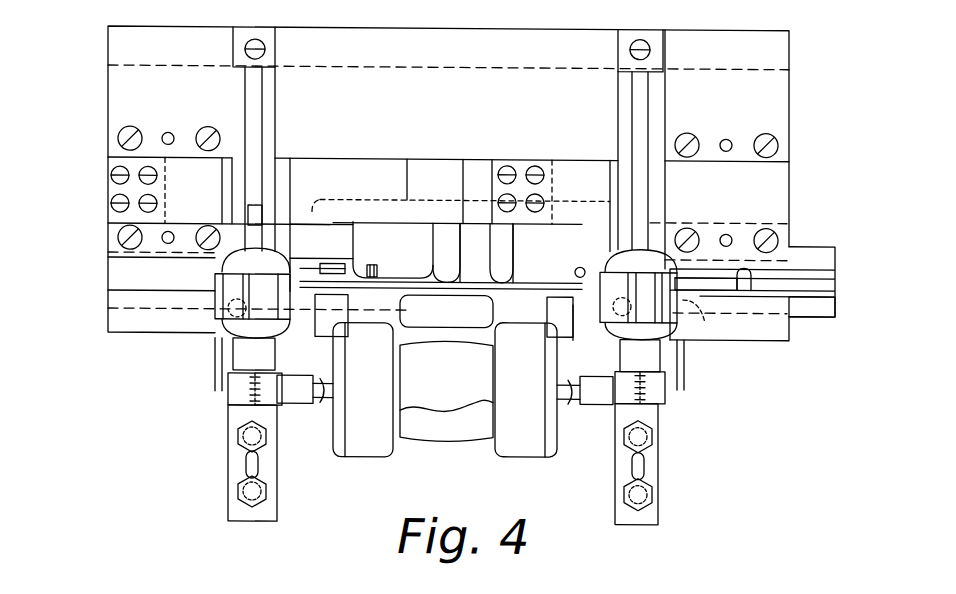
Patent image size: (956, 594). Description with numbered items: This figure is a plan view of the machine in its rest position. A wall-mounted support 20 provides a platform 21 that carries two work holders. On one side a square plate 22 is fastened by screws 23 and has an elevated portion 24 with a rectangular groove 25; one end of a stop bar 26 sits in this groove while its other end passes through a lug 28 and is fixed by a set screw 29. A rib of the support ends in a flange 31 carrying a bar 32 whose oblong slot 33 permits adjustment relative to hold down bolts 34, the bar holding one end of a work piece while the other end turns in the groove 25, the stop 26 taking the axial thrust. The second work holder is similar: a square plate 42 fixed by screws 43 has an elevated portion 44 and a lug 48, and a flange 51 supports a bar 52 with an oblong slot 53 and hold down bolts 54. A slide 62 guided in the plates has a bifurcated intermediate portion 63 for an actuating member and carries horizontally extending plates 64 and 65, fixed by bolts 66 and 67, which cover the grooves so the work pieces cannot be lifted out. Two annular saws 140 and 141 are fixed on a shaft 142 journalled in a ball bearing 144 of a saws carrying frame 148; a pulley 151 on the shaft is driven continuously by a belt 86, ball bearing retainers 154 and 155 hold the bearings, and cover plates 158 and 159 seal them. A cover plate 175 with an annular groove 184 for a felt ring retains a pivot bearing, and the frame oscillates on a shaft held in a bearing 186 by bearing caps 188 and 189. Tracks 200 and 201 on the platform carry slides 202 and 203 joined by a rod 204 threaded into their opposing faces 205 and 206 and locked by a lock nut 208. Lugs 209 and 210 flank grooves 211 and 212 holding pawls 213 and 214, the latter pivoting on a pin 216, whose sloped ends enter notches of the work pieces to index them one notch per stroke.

The support 20 is at (780, 51).
The platform 21 is at (420, 83).
The square plate 22 is at (115, 105).
The screws 23 is at (205, 128).
The elevated portion 24 is at (270, 172).
The rectangular groove 25 is at (293, 200).
The stop bar 26 is at (256, 123).
The lug 28 is at (276, 56).
The set screw 29 is at (244, 49).
The flange 31 is at (257, 467).
The bar 32 is at (272, 503).
The oblong slot 33 is at (248, 460).
The hold down bolts 34 is at (250, 436).
The square plate 42 is at (775, 110).
The screws 43 is at (761, 132).
The elevated portion 44 is at (655, 188).
The lug 48 is at (630, 49).
The flange 51 is at (641, 464).
The bar 52 is at (660, 468).
The oblong slot 53 is at (632, 466).
The hold down bolts 54 is at (642, 496).
The slide 62 is at (378, 180).
The bifurcated intermediate portion 63 is at (470, 305).
The horizontally extending plate 64 is at (214, 170).
The horizontally extending plate 65 is at (578, 172).
The bolts 66 is at (112, 195).
The bolts 67 is at (535, 162).
The belt 86 is at (430, 408).
The annular saw 140 is at (255, 392).
The annular saw 141 is at (642, 391).
The shaft 142 is at (292, 382).
The ball bearing 144 is at (346, 320).
The saws carrying frame 148 is at (520, 437).
The pulley 151 is at (472, 436).
The ball bearing retainer 154 is at (316, 412).
The ball bearing retainer 155 is at (576, 417).
The cover plate 158 is at (340, 450).
The cover plate 159 is at (555, 449).
The cover plate 175 is at (548, 315).
The annular groove 184 is at (675, 348).
The bearing 186 is at (232, 352).
The bearing cap 188 is at (228, 382).
The bearing cap 189 is at (668, 379).
The track 200 is at (137, 340).
The track 201 is at (765, 316).
The slide 202 is at (140, 300).
The slide 203 is at (812, 302).
The rod 204 is at (470, 260).
The opposing face 205 is at (362, 243).
The opposing face 206 is at (588, 264).
The lock nut 208 is at (563, 322).
The lug 209 is at (330, 260).
The lug 210 is at (745, 290).
The groove 211 is at (145, 268).
The groove 212 is at (800, 274).
The pawl 213 is at (264, 215).
The pawl 214 is at (698, 278).
The pin 216 is at (692, 317).